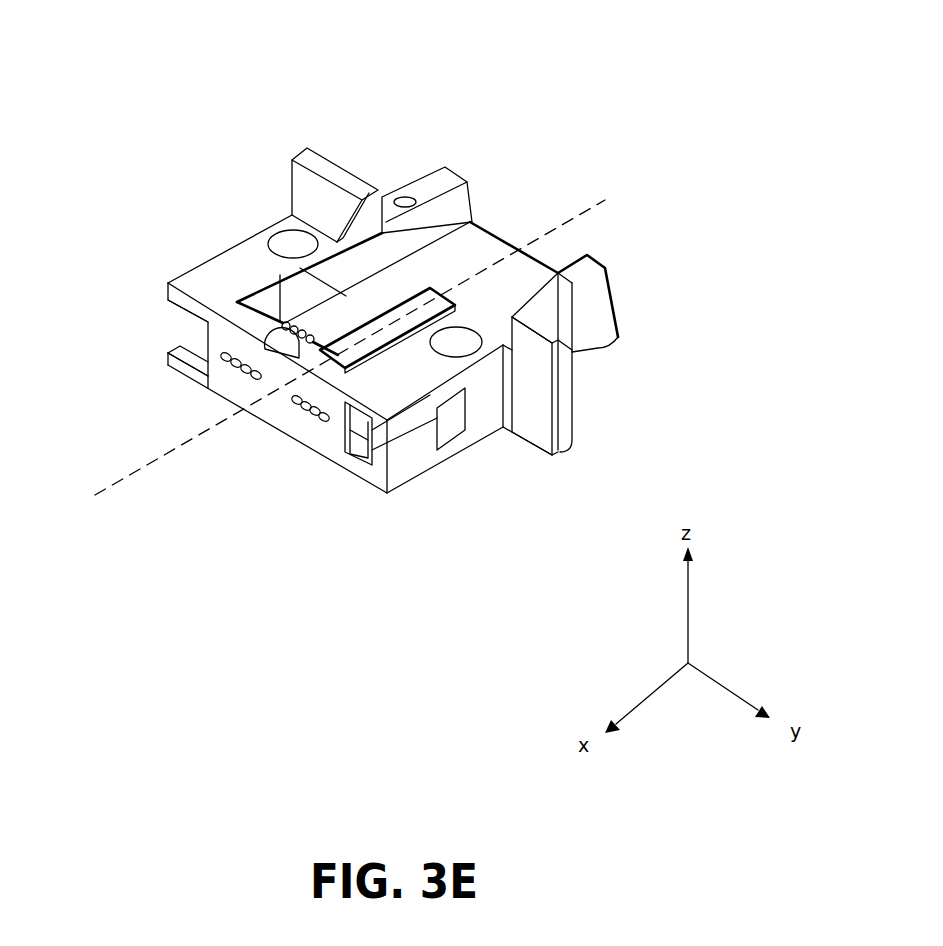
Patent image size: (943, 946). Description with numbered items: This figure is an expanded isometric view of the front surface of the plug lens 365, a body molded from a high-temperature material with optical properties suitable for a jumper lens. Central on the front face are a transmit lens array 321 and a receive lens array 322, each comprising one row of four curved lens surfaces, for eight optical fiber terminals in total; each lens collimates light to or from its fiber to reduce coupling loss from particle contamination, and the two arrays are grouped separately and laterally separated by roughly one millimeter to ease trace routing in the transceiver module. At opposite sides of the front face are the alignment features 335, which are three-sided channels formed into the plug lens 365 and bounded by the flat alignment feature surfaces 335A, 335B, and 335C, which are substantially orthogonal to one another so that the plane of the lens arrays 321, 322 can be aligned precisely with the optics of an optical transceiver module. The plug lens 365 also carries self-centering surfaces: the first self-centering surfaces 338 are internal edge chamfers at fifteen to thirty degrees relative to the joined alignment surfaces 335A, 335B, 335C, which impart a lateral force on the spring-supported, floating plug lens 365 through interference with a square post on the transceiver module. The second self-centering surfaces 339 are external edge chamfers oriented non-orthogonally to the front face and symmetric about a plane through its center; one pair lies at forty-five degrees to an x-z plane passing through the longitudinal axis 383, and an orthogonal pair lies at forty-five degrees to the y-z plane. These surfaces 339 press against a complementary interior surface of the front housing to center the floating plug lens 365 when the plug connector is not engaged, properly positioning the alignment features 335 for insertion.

The plug lens 365 is at (187, 148).
The longitudinal axis 383 is at (573, 217).
The alignment features 335 is at (185, 330).
The transmit lens array 321 is at (237, 380).
The receive lens array 322 is at (290, 414).
The first self-centering surfaces 338 is at (352, 462).
The alignment feature surface 335A is at (416, 456).
The alignment feature surface 335B is at (381, 450).
The alignment feature surface 335C is at (432, 422).
The second self-centering surfaces 339 is at (543, 356).